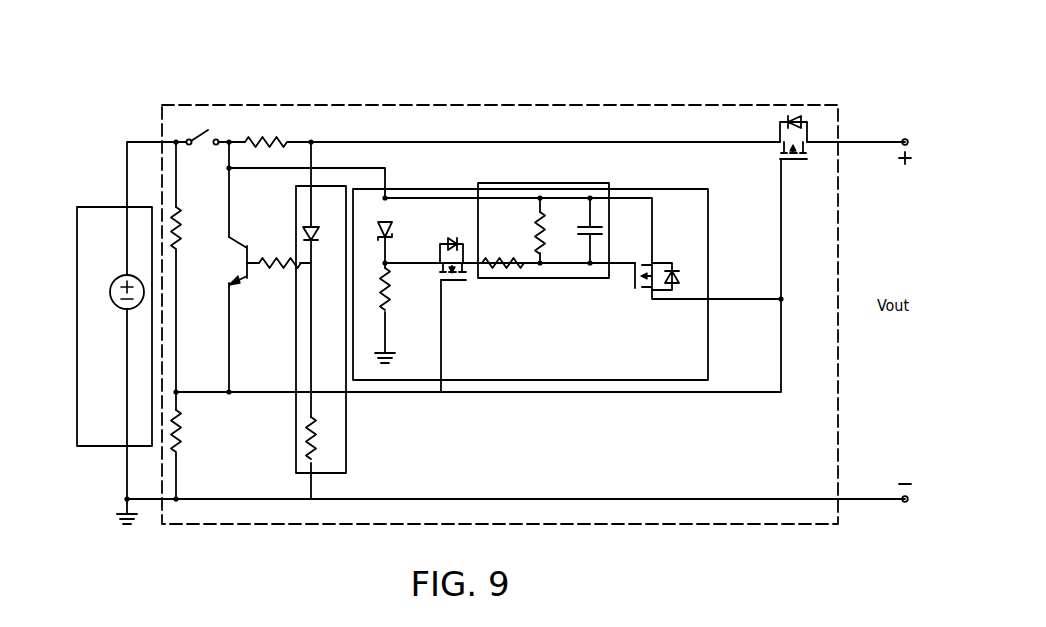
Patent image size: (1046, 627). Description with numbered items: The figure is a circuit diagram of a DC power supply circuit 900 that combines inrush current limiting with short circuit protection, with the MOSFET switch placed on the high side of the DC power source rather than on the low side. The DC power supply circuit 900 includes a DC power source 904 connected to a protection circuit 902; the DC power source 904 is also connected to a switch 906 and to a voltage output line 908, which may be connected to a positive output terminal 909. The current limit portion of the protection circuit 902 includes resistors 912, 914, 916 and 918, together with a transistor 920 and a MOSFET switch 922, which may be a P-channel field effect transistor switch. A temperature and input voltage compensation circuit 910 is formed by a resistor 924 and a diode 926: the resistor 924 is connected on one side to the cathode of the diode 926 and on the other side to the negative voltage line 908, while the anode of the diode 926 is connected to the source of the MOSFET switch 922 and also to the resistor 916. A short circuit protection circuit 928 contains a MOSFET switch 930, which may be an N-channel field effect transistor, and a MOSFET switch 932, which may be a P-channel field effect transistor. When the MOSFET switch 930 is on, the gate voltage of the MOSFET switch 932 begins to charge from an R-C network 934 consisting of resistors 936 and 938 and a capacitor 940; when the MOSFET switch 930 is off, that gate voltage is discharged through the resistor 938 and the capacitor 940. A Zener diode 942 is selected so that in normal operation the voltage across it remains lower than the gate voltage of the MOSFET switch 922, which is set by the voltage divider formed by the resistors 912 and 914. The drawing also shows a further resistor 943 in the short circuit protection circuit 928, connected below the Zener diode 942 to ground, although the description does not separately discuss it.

The DC power supply circuit 900 is at (112, 141).
The protection circuit 902 is at (839, 390).
The DC power source 904 is at (90, 447).
The switch 906 is at (207, 132).
The voltage output line 908 is at (553, 498).
The positive output terminal 909 is at (903, 138).
The temperature and input voltage compensation circuit 910 is at (296, 366).
The resistor 912 is at (175, 207).
The resistor 914 is at (181, 430).
The resistor 916 is at (270, 271).
The resistor 918 is at (288, 142).
The transistor 920 is at (230, 247).
The MOSFET switch 922 is at (797, 122).
The resistor 924 is at (346, 466).
The diode 926 is at (305, 227).
The short circuit protection circuit 928 is at (710, 240).
The MOSFET switch 930 is at (440, 244).
The MOSFET switch 932 is at (661, 299).
The R-C network 934 is at (575, 183).
The resistor 936 is at (503, 270).
The resistor 938 is at (537, 212).
The capacitor 940 is at (578, 239).
The Zener diode 942 is at (385, 198).
The resistor R4 943 is at (397, 300).